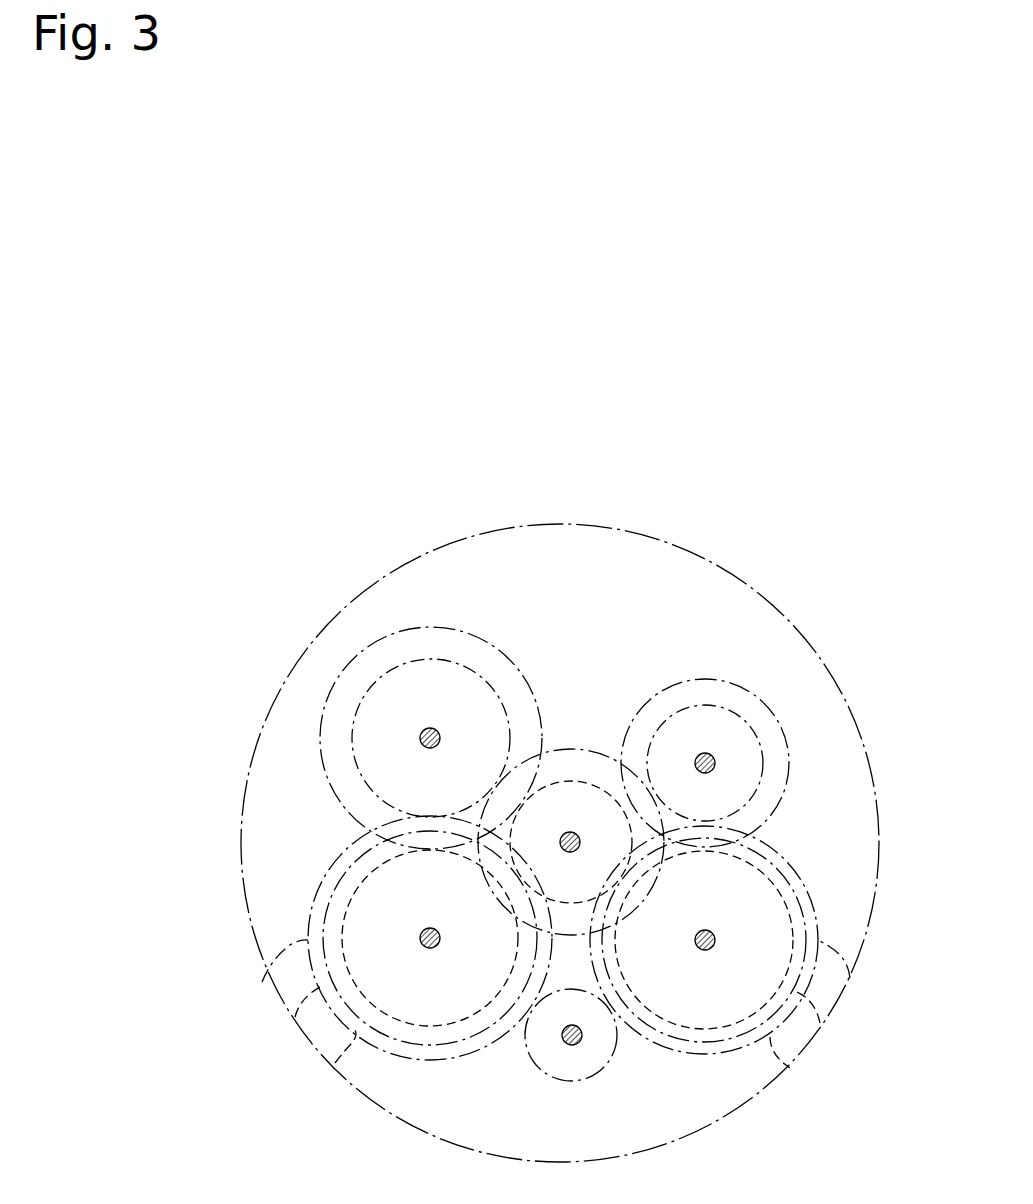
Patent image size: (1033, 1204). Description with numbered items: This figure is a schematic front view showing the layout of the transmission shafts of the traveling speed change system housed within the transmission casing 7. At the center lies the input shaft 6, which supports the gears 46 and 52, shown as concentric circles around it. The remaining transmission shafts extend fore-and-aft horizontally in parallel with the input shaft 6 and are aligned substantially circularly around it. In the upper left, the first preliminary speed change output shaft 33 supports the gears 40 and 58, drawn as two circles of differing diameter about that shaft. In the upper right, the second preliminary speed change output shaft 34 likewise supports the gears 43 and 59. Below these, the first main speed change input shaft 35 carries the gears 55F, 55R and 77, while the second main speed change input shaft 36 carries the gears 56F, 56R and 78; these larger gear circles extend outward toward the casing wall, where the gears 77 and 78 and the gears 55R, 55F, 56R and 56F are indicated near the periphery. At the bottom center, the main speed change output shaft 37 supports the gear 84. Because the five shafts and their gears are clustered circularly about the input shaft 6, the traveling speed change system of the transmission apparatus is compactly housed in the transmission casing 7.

The transmission casing 7 is at (680, 545).
The gear 58 is at (446, 628).
The gear 40 is at (493, 682).
The first preliminary speed change output shaft 33 is at (430, 728).
The gear 46 is at (598, 750).
The gear 52 is at (546, 772).
The input shaft 6 is at (570, 832).
The gear 59 is at (745, 690).
The gear 43 is at (672, 712).
The second preliminary speed change output shaft 34 is at (706, 753).
The first main speed change input shaft 35 is at (430, 928).
The second main speed change input shaft 36 is at (705, 930).
The main speed change output shaft 37 is at (572, 1025).
The gear 84 is at (535, 1068).
The gear 77 is at (272, 960).
The gear 78 is at (858, 961).
The gear 55R is at (293, 1017).
The gear 55F is at (336, 1064).
The gear 56R is at (822, 1023).
The gear 56F is at (790, 1066).